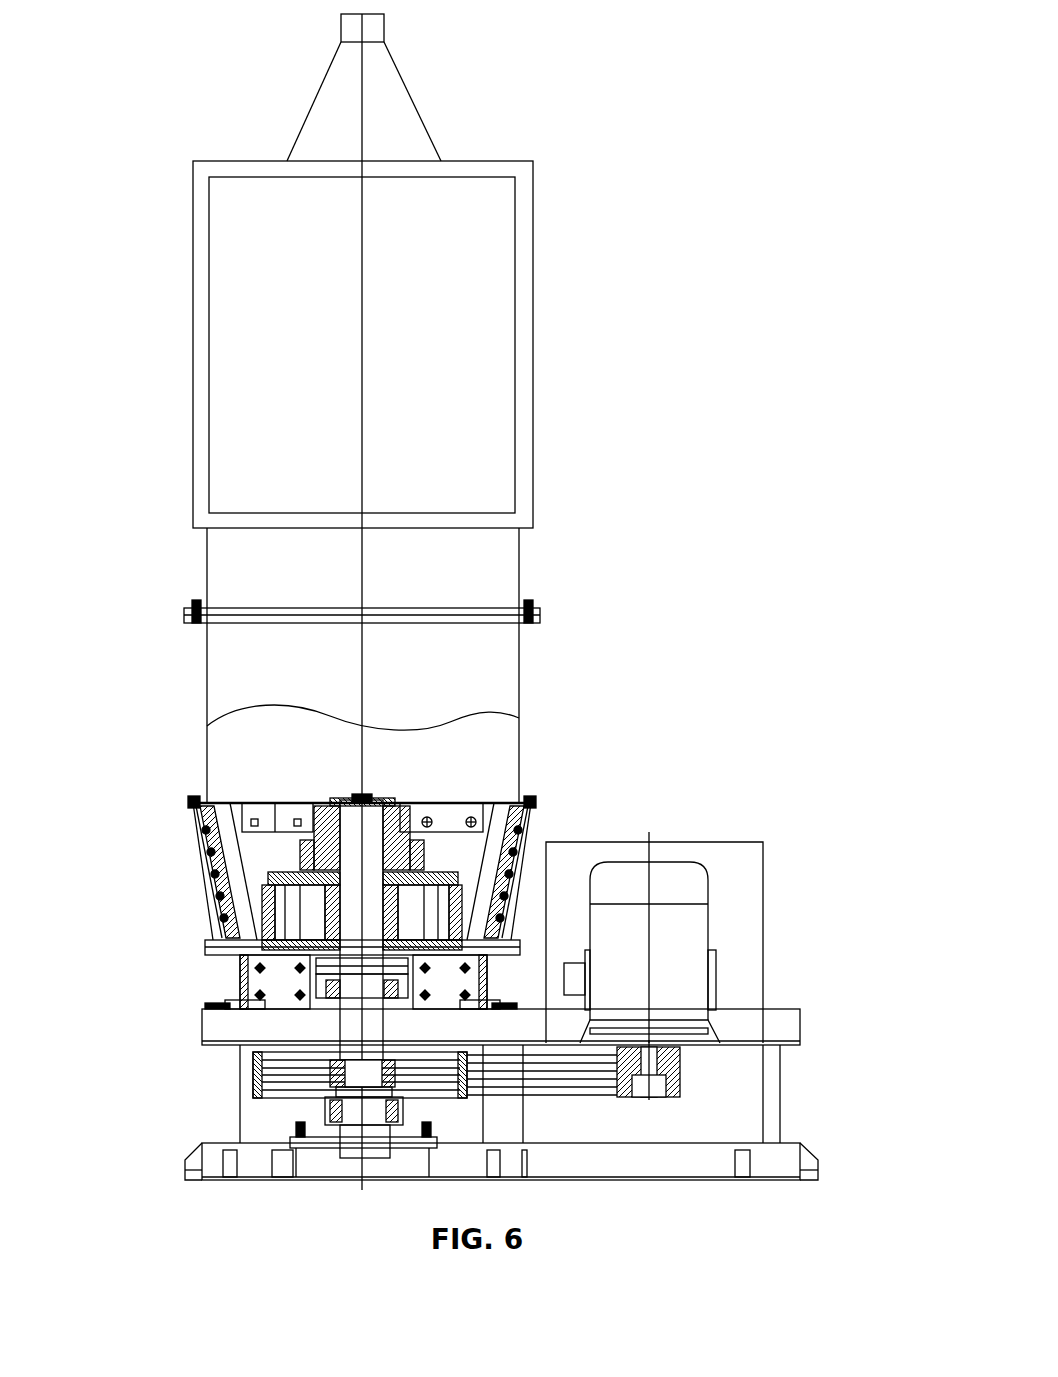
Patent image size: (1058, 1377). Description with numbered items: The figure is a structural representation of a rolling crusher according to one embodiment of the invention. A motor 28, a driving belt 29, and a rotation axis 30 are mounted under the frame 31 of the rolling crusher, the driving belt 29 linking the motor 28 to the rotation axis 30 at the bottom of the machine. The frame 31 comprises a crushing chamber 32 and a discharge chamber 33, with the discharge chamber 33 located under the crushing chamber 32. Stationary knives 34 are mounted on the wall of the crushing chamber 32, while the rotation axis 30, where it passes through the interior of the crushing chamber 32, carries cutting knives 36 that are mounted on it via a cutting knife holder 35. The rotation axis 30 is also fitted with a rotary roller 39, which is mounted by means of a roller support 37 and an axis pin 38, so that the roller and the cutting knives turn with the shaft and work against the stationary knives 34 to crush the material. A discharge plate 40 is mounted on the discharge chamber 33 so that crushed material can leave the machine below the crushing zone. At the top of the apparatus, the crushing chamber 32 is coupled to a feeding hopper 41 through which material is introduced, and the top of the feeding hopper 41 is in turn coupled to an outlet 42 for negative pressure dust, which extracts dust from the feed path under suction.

The motor 28 is at (672, 889).
The driving belt 29 is at (596, 1077).
The rotation axis 30 is at (372, 833).
The frame 31 is at (260, 1028).
The crushing chamber 32 is at (257, 855).
The discharge chamber 33 is at (238, 970).
The stationary knives 34 is at (470, 940).
The cutting knife holder 35 is at (248, 813).
The cutting knives 36 is at (433, 817).
The roller support 37 is at (447, 862).
The axis pin 38 is at (461, 890).
The rotary roller 39 is at (510, 858).
The discharge plate 40 is at (500, 930).
The feeding hopper 41 is at (418, 360).
The outlet for negative pressure dust 42 is at (389, 125).